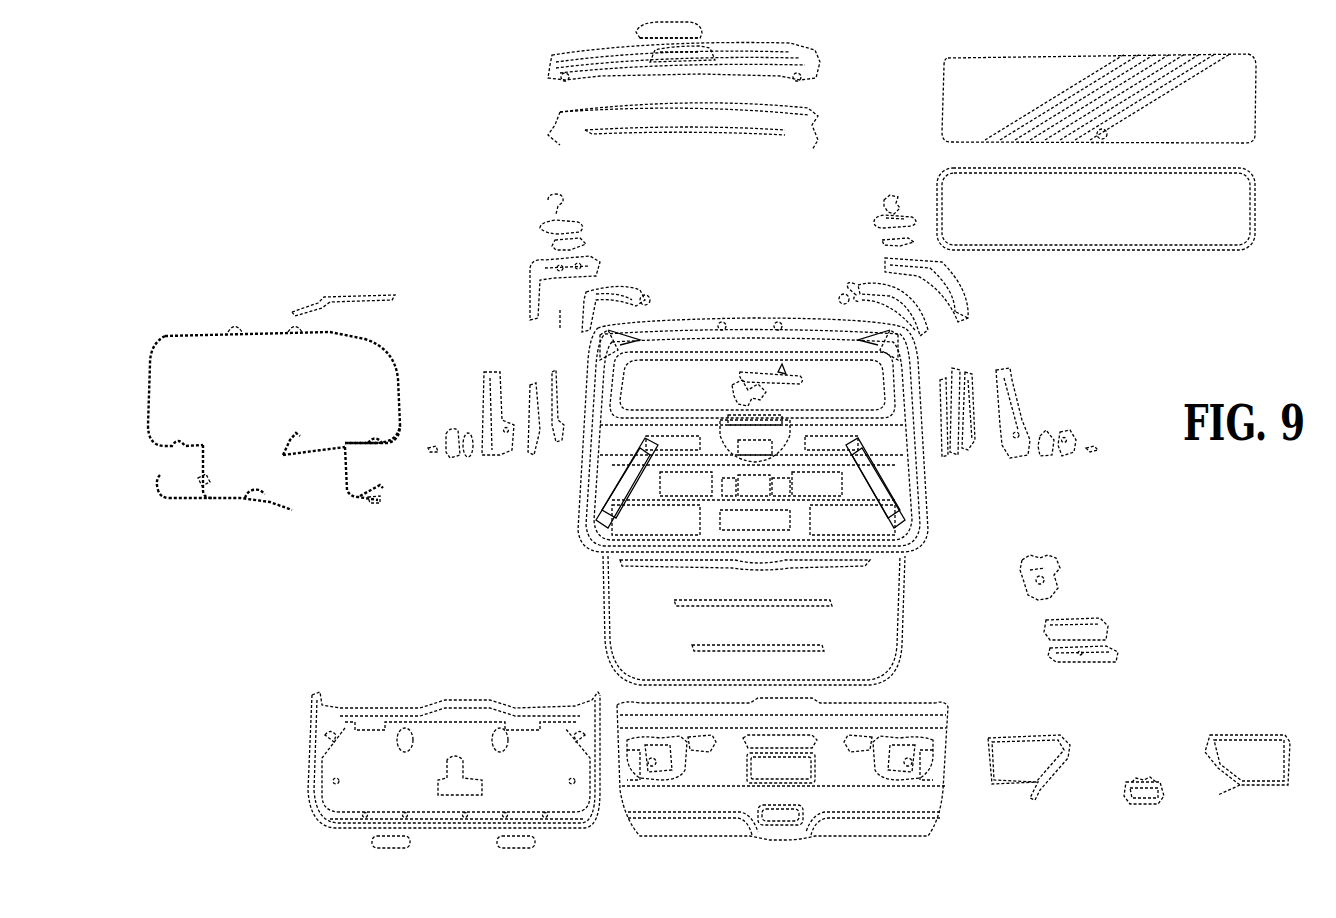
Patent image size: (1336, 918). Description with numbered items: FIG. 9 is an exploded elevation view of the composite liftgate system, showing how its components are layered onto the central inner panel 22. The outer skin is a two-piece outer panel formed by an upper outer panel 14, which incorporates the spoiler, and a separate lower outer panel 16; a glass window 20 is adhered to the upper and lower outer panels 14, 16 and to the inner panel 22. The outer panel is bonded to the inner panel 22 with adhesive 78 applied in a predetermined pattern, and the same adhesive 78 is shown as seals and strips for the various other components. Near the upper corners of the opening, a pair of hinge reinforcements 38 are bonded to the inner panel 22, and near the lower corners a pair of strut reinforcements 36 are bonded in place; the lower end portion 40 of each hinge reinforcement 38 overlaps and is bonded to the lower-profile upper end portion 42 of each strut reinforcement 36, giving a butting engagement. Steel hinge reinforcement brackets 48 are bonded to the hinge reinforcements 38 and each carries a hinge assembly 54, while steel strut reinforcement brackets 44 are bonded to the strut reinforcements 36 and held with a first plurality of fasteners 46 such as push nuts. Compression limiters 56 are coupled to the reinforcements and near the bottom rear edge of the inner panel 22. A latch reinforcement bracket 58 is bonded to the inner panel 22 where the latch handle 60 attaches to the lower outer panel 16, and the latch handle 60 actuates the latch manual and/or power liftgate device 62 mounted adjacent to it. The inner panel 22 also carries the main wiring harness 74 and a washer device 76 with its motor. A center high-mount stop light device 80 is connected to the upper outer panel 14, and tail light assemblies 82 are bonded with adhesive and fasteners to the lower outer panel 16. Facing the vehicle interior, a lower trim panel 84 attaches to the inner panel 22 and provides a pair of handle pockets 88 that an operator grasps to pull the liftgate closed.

The upper outer panel 14 is at (822, 58).
The lower outer panel 16 is at (950, 800).
The glass window 20 is at (1258, 90).
The inner panel 22 is at (925, 508).
The strut reinforcements 36 is at (1020, 415).
The hinge reinforcements 38 is at (960, 285).
The lower end portion 40 is at (968, 320).
The upper end portion 42 is at (1010, 372).
The strut reinforcement brackets 44 is at (1066, 456).
The first plurality of fasteners 46 is at (1092, 446).
The hinge reinforcement brackets 48 is at (900, 212).
The hinge assembly 54 is at (888, 195).
The compression limiter 56 is at (838, 296).
The latch reinforcement bracket 58 is at (1118, 652).
The latch handle 60 is at (1164, 790).
The latch manual and/or power liftgate device 62 is at (1060, 582).
The main wiring harness 74 is at (265, 330).
The washer device 76 is at (370, 296).
The adhesive 78 is at (548, 140).
The center high-mount stop light device 80 is at (702, 30).
The tail light assembly 82 is at (1010, 736).
The lower trim panel 84 is at (290, 776).
The handle pockets 88 is at (372, 842).